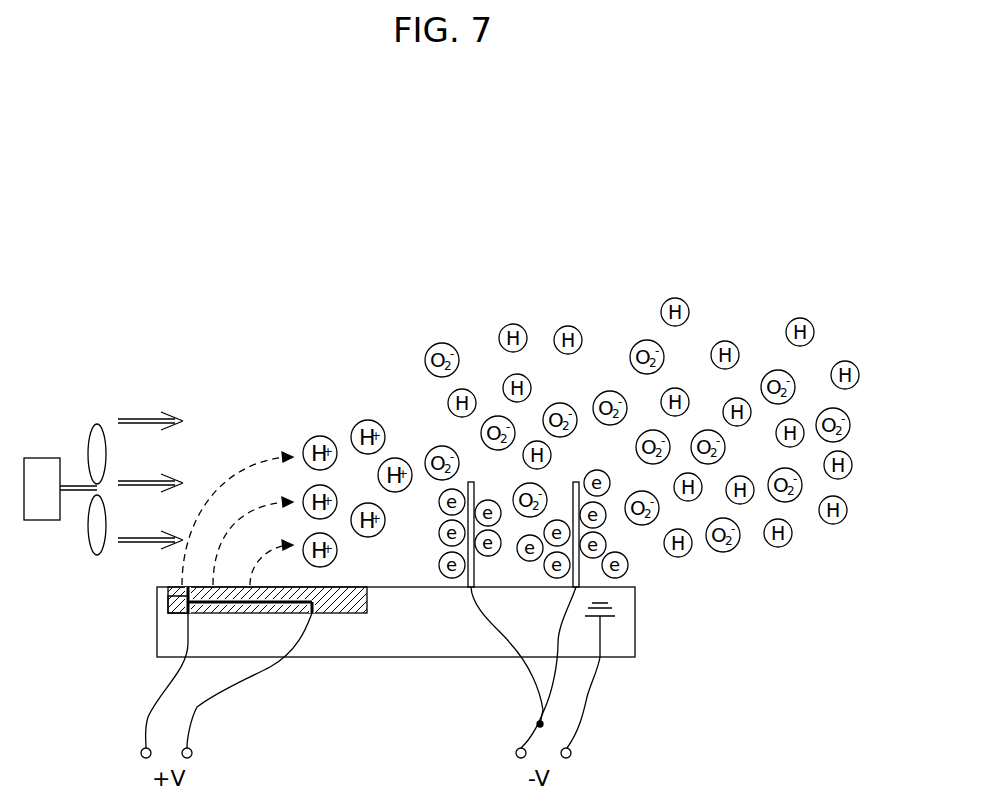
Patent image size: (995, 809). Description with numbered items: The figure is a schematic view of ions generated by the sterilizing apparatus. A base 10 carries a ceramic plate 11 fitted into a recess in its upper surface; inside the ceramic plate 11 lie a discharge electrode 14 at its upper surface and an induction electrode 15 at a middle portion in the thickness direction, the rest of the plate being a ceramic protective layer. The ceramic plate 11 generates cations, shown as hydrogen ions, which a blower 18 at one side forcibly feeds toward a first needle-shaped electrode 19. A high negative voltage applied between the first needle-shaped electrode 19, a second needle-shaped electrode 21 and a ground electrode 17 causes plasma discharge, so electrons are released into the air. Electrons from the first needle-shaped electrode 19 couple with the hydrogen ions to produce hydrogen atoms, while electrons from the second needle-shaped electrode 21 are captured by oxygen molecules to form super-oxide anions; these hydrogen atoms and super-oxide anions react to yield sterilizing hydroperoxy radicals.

The base 10 is at (172, 640).
The ceramic plate 11 is at (172, 600).
The discharge electrode 14 is at (353, 613).
The induction electrode 15 is at (318, 613).
The ground electrode 17 is at (600, 643).
The blower 18 is at (60, 435).
The first needle-shaped electrode 19 is at (463, 568).
The second needle-shaped electrode 21 is at (577, 570).